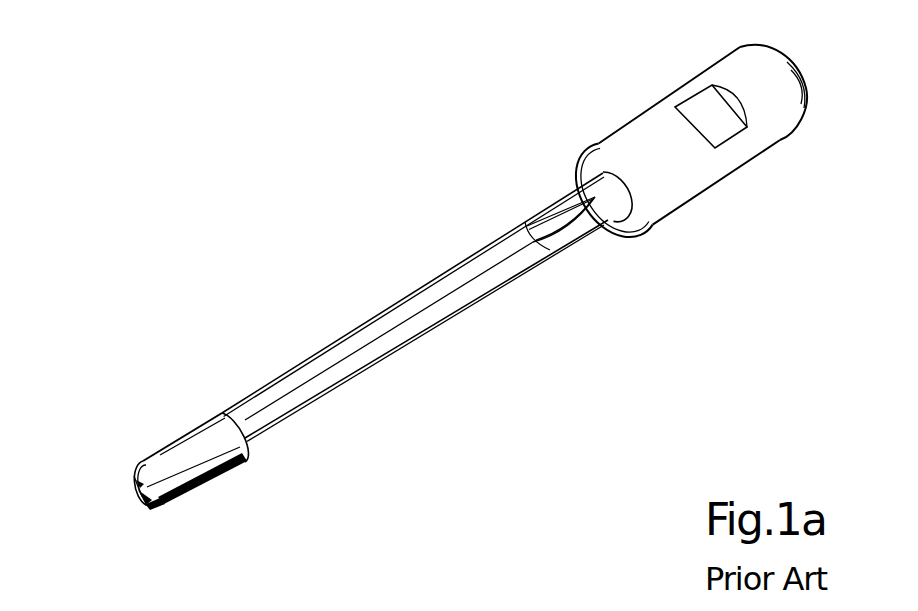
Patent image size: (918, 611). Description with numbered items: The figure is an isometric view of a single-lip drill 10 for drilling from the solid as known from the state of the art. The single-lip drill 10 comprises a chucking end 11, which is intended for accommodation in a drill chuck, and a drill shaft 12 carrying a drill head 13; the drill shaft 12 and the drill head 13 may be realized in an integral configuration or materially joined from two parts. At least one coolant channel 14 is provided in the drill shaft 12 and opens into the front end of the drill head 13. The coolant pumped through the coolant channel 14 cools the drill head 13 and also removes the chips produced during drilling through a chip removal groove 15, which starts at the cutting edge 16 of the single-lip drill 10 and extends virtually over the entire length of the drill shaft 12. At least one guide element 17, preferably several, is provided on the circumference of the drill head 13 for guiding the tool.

The single-lip drill 10 is at (462, 217).
The chucking end 11 is at (648, 120).
The drill shaft 12 is at (362, 325).
The drill head 13 is at (170, 443).
The coolant channel 14 is at (135, 485).
The chip removal groove 15 is at (190, 447).
The cutting edge 16 is at (152, 508).
The guide element 17 is at (193, 490).